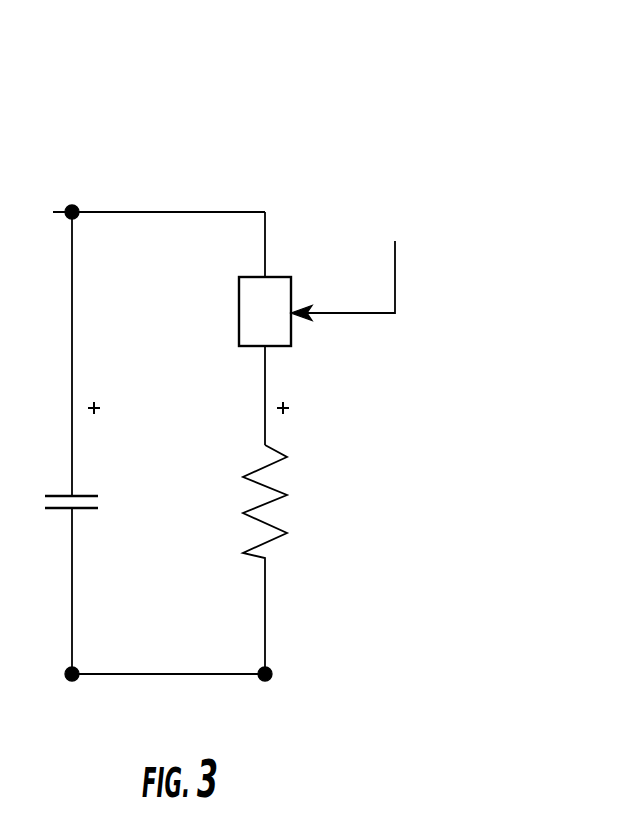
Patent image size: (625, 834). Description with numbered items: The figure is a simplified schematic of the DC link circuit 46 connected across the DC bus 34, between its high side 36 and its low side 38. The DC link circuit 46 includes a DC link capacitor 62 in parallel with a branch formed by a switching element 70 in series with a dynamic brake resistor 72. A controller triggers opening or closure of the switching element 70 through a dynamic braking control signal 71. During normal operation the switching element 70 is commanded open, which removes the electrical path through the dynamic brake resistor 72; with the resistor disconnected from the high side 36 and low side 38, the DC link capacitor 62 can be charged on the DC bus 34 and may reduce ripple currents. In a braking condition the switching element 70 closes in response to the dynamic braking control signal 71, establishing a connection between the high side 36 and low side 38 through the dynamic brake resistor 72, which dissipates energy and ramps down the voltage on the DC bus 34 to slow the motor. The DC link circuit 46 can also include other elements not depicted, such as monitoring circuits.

The DC link circuit 46 is at (232, 73).
The DC bus 34 is at (133, 212).
The high side 36 is at (247, 212).
The low side 38 is at (148, 674).
The DC link capacitor 62 is at (72, 626).
The switching element 70 is at (265, 361).
The dynamic braking control signal 71 is at (483, 228).
The dynamic brake resistor 72 is at (265, 627).